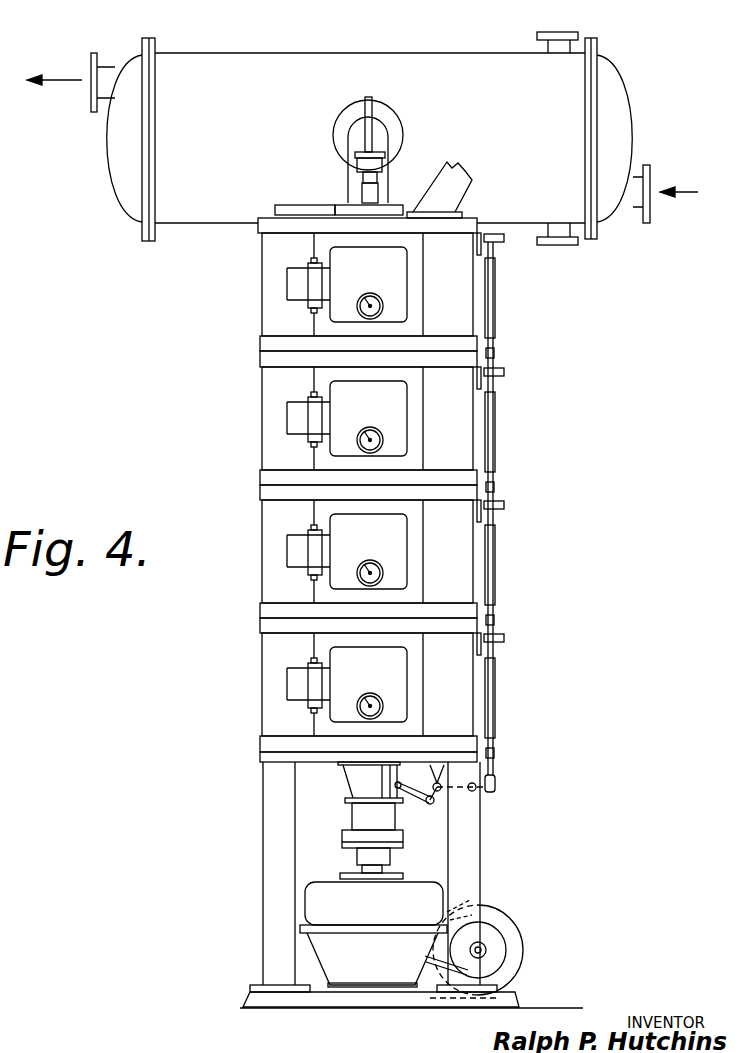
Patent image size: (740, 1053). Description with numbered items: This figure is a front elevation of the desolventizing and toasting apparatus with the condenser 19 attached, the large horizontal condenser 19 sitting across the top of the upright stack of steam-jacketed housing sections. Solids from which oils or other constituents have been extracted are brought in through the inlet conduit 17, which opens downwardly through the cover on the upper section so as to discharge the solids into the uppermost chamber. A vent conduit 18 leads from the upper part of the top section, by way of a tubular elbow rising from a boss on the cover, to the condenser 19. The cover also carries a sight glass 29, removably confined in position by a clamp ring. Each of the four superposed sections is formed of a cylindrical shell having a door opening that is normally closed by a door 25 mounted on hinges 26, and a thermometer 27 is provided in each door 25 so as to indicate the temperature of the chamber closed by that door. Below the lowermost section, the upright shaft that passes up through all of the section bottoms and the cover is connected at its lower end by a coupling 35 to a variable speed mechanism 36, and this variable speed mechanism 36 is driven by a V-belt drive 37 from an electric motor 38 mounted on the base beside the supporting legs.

The inlet conduit 17 is at (470, 185).
The vent conduit 18 is at (383, 132).
The condenser 19 is at (300, 62).
The door 25 is at (390, 268).
The hinges 26 is at (315, 280).
The thermometer 27 is at (383, 307).
The sight glass 29 is at (292, 204).
The coupling 35 is at (347, 836).
The variable speed mechanism 36 is at (349, 948).
The V-belt drive 37 is at (430, 968).
The electric motor 38 is at (508, 923).